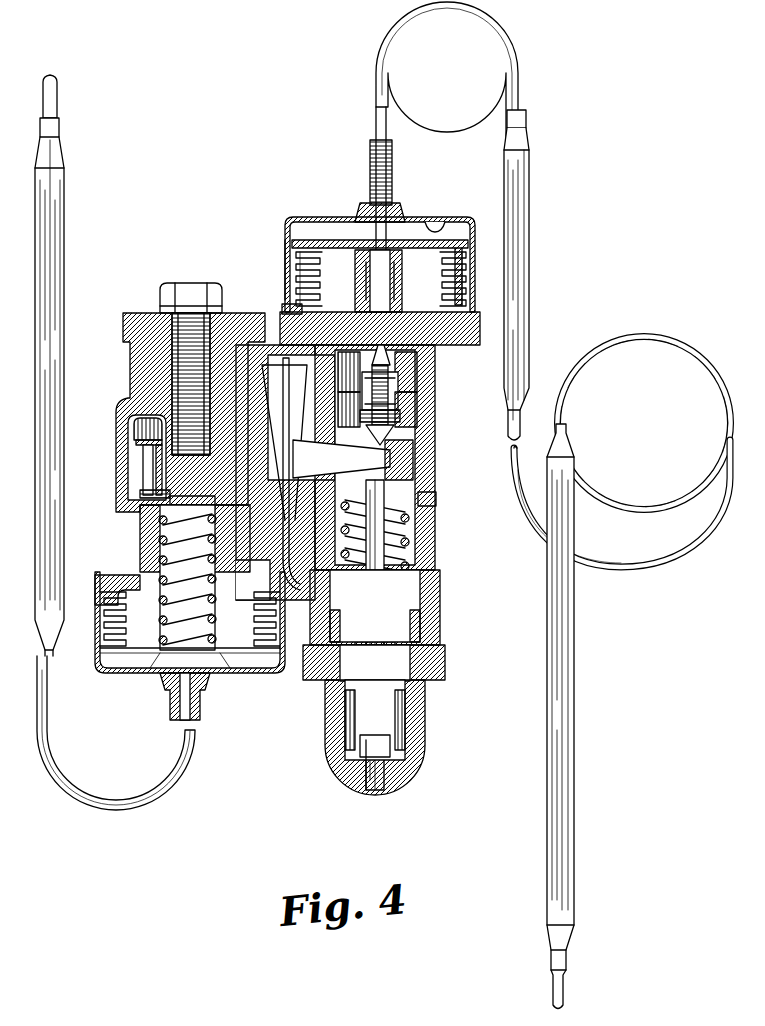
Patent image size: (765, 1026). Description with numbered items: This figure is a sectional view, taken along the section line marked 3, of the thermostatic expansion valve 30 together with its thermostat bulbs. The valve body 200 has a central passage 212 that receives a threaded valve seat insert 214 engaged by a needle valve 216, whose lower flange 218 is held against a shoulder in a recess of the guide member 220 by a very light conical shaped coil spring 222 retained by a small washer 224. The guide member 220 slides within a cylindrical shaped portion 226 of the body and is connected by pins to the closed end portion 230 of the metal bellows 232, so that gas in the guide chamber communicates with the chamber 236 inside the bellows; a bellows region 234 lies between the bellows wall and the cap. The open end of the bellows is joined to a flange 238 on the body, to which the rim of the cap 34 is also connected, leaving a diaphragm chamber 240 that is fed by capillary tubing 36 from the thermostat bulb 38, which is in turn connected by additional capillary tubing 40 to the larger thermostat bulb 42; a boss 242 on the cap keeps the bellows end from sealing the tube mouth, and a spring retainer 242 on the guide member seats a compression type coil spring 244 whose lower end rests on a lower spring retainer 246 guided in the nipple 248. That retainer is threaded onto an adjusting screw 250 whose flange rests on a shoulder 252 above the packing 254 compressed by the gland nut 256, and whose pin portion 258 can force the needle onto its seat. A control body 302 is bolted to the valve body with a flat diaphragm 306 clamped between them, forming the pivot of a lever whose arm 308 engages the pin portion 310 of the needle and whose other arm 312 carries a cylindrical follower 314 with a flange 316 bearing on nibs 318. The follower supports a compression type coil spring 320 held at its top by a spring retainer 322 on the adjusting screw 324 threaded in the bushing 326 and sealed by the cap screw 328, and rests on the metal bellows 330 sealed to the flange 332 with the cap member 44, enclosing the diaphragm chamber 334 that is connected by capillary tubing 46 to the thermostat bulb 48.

The section line 3- 3 is at (381, 125).
The thermostatic expansion valve 30 is at (445, 579).
The cap 34 is at (285, 243).
The capillary tubing 36 is at (390, 83).
The thermostat bulb 38 is at (525, 256).
The additional capillary tubing 40 is at (600, 364).
The larger thermostat bulb 42 is at (572, 703).
The cap member 44 is at (98, 631).
The capillary tubing 46 is at (108, 810).
The thermostat bulb 48 is at (36, 352).
The valve body 200 is at (322, 338).
The passage 212 is at (372, 295).
The valve seat insert 214 is at (412, 356).
The needle valve 216 is at (408, 368).
The flange 218 is at (386, 440).
The guide member 220 is at (398, 426).
The conical shaped coil spring 222 is at (402, 398).
The washer 224 is at (400, 382).
The cylindrical shaped portion 226 is at (432, 518).
The closed end portion 230 is at (336, 250).
The metal bellows 232 is at (468, 240).
The guide 234 is at (408, 414).
The chamber 236 is at (435, 285).
The flange 238 is at (292, 318).
The diaphragm chamber 240 is at (302, 230).
The boss 242 is at (434, 228).
The compression type coil spring 244 is at (406, 548).
The lower spring retainer 246 is at (428, 640).
The nipple 248 is at (432, 668).
The adjusting screw 250 is at (398, 603).
The shoulder 252 is at (422, 694).
The packing 254 is at (408, 703).
The gland nut 256 is at (400, 718).
The pin portion 258 is at (386, 564).
The control body 302 is at (150, 522).
The flat diaphragm 306 is at (292, 560).
The lever arm 308 is at (398, 476).
The pin portion 310 is at (392, 462).
The lever arm 312 is at (140, 463).
The cylindrical follower 314 is at (166, 484).
The flange 316 is at (148, 432).
The nibs 318 is at (140, 443).
The compression type coil spring 320 is at (188, 536).
The spring retainer 322 is at (168, 512).
The adjusting screw 324 is at (184, 400).
The bushing 326 is at (130, 328).
The cap screw 328 is at (192, 296).
The metal bellows 330 is at (102, 650).
The flange 332 is at (122, 578).
The diaphragm chamber 334 is at (262, 680).